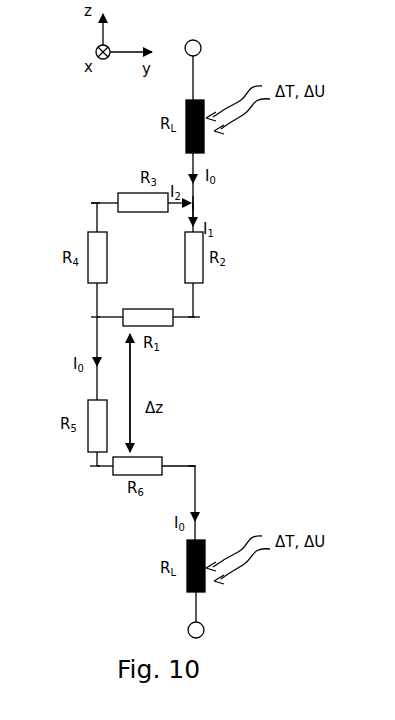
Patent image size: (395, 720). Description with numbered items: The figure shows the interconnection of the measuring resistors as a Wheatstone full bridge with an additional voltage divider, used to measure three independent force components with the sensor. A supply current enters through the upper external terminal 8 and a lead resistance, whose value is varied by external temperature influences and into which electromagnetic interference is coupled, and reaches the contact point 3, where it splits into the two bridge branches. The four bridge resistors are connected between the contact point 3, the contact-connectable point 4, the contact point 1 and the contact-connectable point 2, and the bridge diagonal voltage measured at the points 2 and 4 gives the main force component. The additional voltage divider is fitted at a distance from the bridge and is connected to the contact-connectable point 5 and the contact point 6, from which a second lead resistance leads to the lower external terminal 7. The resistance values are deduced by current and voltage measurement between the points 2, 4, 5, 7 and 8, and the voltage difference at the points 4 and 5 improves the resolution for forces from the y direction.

The contact point 1 is at (87, 317).
The contact-connectable point 2 is at (202, 317).
The contact point 3 is at (205, 203).
The contact-connectable point 4 is at (87, 203).
The contact-connectable point 5 is at (90, 474).
The contact point 6 is at (199, 462).
The contact-connectable point 7 is at (206, 631).
The contact-connectable point 8 is at (205, 49).